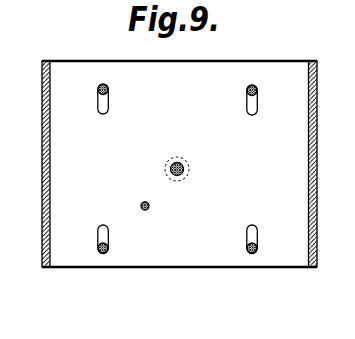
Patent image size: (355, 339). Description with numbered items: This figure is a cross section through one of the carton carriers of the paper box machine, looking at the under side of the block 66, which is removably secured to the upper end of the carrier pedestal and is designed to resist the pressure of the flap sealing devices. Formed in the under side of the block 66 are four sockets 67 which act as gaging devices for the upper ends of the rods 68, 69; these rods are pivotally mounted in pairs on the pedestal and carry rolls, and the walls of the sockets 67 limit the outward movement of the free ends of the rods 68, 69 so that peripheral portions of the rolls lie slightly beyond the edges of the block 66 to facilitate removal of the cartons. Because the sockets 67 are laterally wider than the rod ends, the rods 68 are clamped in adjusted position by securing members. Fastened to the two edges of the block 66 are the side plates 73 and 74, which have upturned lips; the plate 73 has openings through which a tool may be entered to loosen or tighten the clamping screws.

The block 66 is at (190, 268).
The socket 67 is at (109, 104).
The rod 68 is at (104, 84).
The rod 69 is at (256, 85).
The side plate 73 is at (42, 150).
The side plate 74 is at (316, 249).